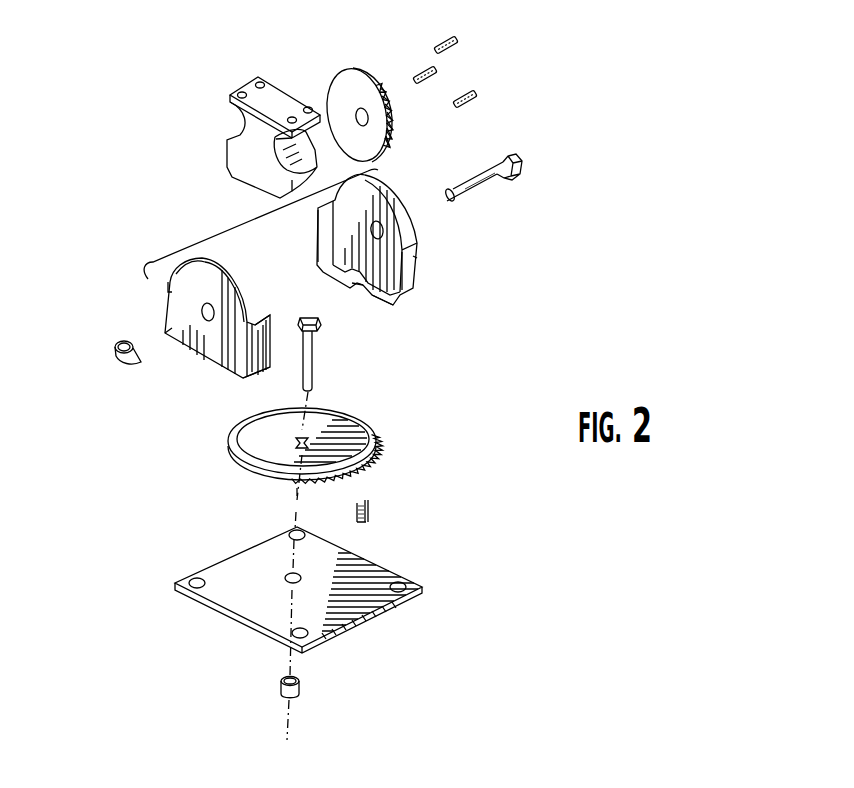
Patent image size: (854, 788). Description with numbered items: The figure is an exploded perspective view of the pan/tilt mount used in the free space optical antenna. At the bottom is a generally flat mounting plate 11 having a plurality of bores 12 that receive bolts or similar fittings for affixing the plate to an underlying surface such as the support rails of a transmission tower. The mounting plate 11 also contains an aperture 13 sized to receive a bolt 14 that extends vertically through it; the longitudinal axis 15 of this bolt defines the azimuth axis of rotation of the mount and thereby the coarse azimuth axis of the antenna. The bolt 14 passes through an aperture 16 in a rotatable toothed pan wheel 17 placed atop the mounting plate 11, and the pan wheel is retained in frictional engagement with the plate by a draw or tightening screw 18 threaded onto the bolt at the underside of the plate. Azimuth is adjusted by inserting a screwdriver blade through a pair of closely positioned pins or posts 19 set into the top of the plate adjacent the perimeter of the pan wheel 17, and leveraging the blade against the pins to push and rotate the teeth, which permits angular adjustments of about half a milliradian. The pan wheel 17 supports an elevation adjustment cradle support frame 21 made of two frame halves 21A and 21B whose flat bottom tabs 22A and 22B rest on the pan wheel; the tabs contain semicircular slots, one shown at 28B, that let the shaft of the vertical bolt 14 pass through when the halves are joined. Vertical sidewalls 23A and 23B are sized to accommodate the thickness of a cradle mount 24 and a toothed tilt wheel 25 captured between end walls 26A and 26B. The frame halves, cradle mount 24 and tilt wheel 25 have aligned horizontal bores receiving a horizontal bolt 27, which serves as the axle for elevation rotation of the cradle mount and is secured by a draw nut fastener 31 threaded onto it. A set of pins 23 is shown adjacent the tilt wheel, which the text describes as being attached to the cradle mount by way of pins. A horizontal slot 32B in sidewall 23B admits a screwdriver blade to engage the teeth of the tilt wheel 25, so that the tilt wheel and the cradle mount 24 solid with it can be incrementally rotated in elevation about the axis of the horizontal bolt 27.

The mounting plate 11 is at (381, 617).
The bores 12 is at (410, 580).
The aperture 13 is at (287, 580).
The bolt 14 is at (318, 368).
The longitudinal axis 15 is at (296, 493).
The aperture 16 is at (232, 433).
The toothed pan wheel 17 is at (372, 432).
The draw or tightening screw 18 is at (300, 690).
The pins or posts 19 is at (368, 504).
The elevation adjustment cradle support frame 21 is at (246, 216).
The frame half 21A is at (226, 273).
The frame half 21B is at (410, 283).
The bottom tab 22A is at (258, 368).
The bottom tab 22B is at (382, 298).
The screws 23 is at (452, 48).
The vertical sidewall 23A is at (257, 320).
The vertical sidewall 23B is at (318, 225).
The cradle mount 24 is at (229, 96).
The toothed tilt wheel 25 is at (356, 70).
The end wall 26A is at (168, 292).
The end wall 26B is at (391, 193).
The horizontal bolt 27 is at (511, 154).
The semicircular slot 28B is at (362, 287).
The draw nut fastener 31 is at (118, 355).
The horizontal slot 32B is at (417, 259).